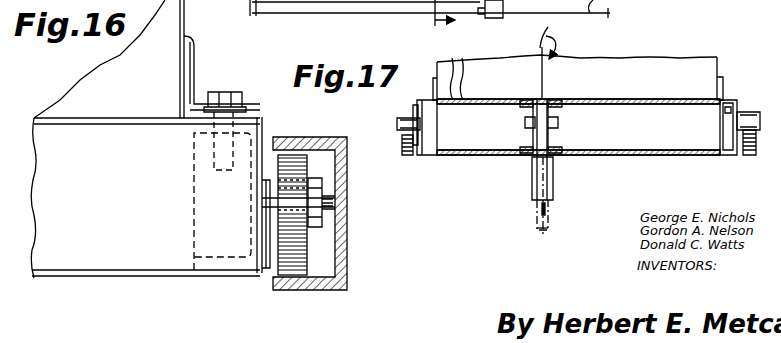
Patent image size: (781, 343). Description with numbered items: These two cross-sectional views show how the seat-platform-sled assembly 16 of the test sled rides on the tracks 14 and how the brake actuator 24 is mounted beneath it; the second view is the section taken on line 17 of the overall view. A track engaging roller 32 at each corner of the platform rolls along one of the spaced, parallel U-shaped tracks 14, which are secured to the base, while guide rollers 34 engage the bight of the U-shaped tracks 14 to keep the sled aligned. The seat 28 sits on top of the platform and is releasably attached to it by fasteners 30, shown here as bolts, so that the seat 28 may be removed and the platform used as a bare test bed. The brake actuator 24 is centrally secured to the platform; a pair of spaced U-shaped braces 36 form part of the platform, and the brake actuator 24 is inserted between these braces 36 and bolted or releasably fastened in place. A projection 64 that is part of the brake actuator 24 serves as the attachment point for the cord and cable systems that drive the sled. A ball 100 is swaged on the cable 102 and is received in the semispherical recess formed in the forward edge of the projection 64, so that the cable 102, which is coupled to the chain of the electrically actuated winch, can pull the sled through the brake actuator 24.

In FIG. 16, the tracks 14 is at (340, 251).
In FIG. 16, the seat-platform-sled assembly 16 is at (202, 64).
In FIG. 17, the section line 17— 17 is at (436, 14).
In FIG. 17, the brake actuator 24 is at (560, 172).
In FIG. 16, the seat 28 is at (165, 38).
In FIG. 16, the fasteners 30 is at (246, 85).
In FIG. 16, the track engaging roller 32 is at (288, 262).
In FIG. 17, the track engaging roller 32 is at (403, 151).
In FIG. 16, the guide rollers 34 is at (322, 204).
In FIG. 17, the guide rollers 34 is at (399, 122).
In FIG. 17, the U-shaped braces 36 is at (530, 140).
In FIG. 17, the projection 64 is at (548, 233).
In FIG. 17, the ball 100 is at (546, 226).
In FIG. 17, the cable 102 is at (325, 13).